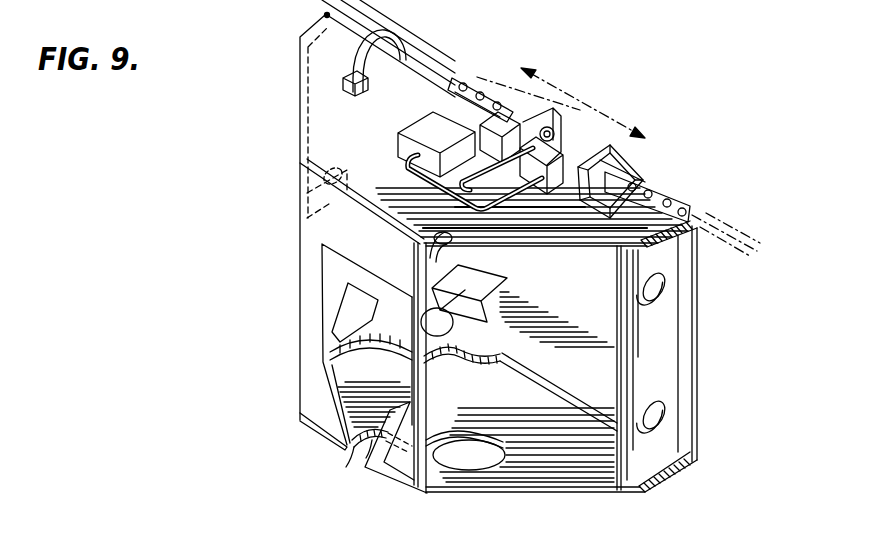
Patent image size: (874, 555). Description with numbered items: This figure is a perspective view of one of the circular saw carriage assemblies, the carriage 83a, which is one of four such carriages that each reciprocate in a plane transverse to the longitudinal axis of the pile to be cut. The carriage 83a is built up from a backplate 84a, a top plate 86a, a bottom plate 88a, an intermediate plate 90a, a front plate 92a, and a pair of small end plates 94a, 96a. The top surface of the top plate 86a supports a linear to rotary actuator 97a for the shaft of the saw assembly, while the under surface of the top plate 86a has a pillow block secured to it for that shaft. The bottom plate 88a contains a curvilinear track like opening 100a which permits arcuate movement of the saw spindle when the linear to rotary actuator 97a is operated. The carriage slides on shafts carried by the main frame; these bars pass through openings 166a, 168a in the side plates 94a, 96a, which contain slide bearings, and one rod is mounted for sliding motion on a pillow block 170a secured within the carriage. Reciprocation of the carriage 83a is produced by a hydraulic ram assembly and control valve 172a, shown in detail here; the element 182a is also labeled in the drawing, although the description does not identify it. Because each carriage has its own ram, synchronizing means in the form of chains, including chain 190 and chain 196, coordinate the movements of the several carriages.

The carriage 83a is at (690, 198).
The backplate 84a is at (690, 324).
The top plate 86a is at (300, 118).
The bottom plate 88a is at (320, 428).
The intermediate plate 90a is at (520, 347).
The front plate 92a is at (310, 296).
The end plate 94a is at (653, 358).
The end plate 96a is at (318, 74).
The linear to rotary actuator 97a is at (397, 150).
The curvilinear track like opening 100a is at (366, 438).
The opening 166a is at (665, 293).
The opening 168a is at (663, 430).
The pillow block 170a is at (305, 196).
The hydraulic ram assembly and control valve 172a is at (418, 64).
The hinge strap 182a is at (466, 100).
The chain 190 is at (670, 190).
The chain 196 is at (534, 73).